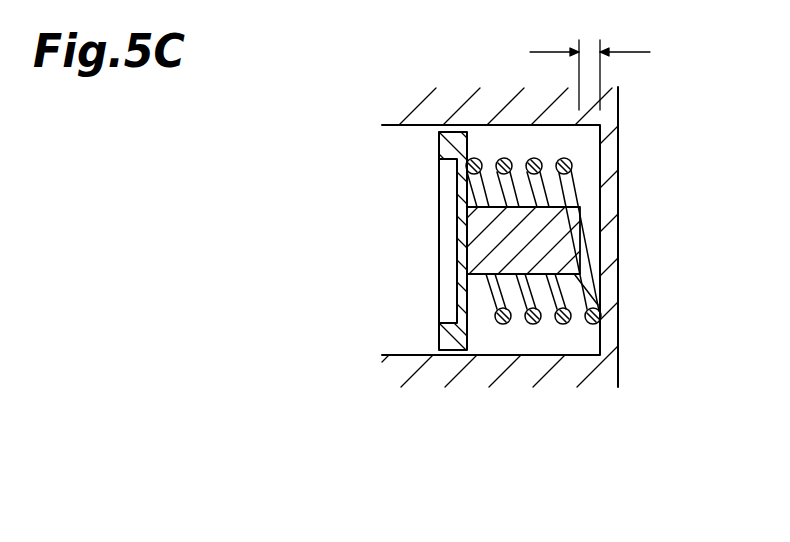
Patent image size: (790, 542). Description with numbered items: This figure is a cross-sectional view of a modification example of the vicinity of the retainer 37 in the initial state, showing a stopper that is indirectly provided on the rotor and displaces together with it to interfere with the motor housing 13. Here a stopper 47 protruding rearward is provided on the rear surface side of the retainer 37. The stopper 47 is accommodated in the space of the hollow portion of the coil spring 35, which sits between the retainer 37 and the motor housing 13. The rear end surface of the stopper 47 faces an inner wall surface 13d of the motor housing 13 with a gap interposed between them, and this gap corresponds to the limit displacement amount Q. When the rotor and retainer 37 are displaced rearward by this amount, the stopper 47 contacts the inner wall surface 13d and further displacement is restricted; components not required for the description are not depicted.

The motor housing 13 is at (401, 100).
The inner wall surface 13d is at (595, 230).
The stopper 47 is at (582, 210).
The coil spring 35 is at (585, 293).
The retainer 37 is at (450, 338).
The limit displacement amount Q is at (590, 65).